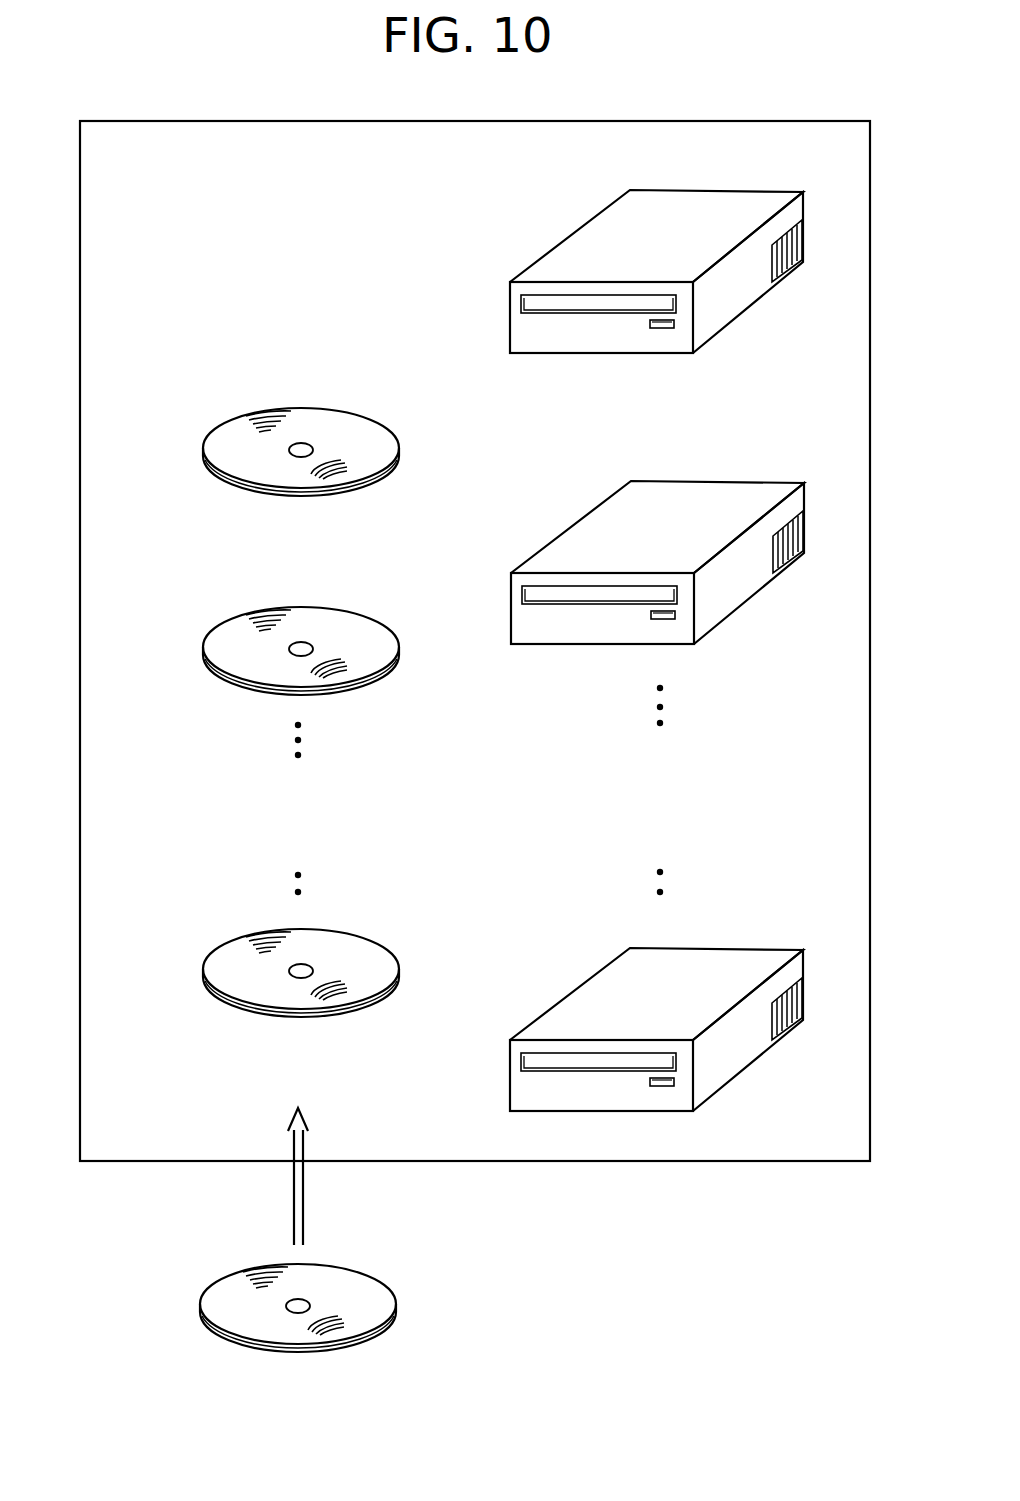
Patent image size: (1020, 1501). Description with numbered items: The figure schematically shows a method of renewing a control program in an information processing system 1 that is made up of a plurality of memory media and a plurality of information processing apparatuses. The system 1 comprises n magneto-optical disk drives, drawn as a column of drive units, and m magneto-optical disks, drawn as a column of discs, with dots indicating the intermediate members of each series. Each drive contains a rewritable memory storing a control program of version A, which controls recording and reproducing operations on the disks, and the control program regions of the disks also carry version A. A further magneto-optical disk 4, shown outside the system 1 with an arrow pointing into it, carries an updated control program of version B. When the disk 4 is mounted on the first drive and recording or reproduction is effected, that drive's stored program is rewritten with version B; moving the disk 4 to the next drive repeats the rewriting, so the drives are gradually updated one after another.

The information processing system 1 is at (773, 1161).
The magneto-optical disk 4 is at (364, 1325).